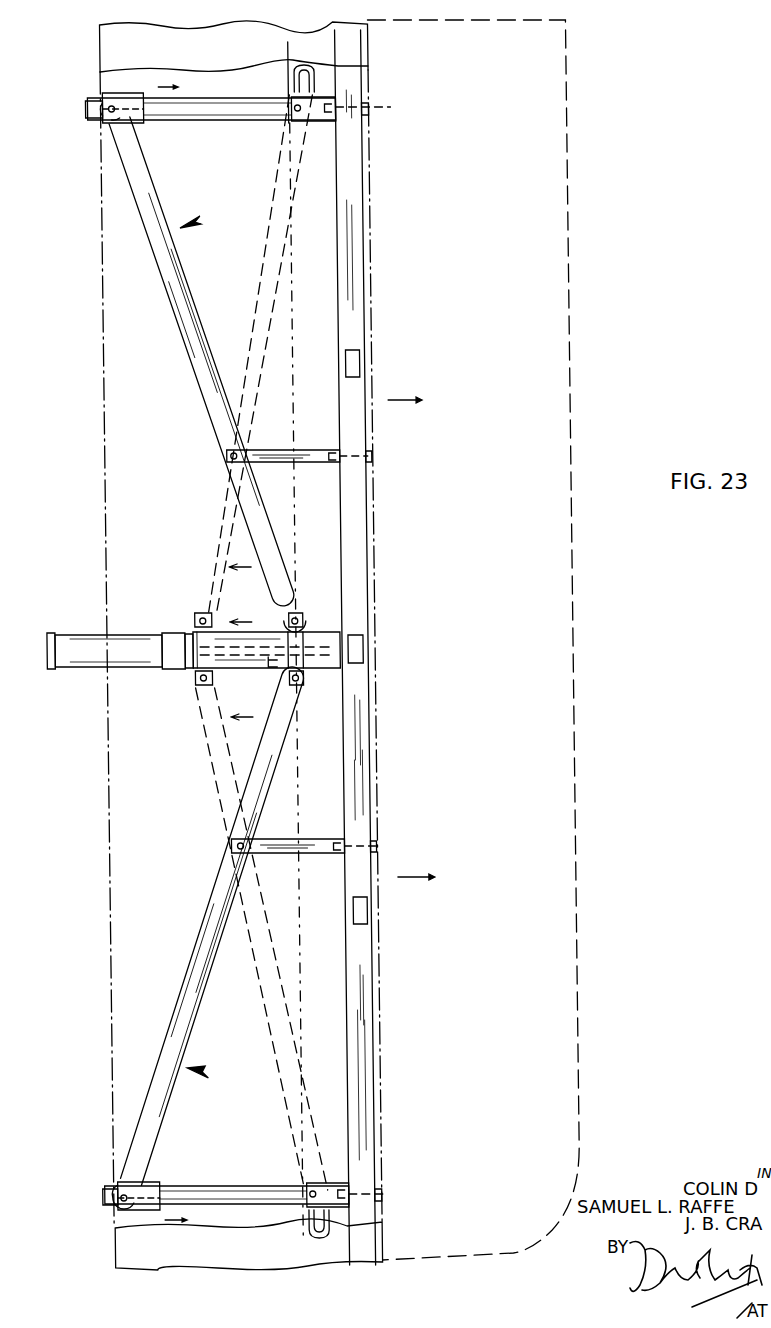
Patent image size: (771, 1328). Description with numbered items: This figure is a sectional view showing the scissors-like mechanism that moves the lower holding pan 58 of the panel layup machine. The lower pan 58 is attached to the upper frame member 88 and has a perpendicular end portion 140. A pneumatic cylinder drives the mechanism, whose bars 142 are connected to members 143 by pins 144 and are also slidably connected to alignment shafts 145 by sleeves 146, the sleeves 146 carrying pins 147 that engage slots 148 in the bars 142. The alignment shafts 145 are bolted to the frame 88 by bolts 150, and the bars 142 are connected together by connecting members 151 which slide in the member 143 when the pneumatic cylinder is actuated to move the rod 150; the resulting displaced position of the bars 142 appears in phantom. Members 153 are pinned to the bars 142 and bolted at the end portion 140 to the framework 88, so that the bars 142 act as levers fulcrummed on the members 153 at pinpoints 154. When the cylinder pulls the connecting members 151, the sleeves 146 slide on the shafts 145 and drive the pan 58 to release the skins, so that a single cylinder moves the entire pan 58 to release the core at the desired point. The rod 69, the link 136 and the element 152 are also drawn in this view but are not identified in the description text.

The lower pan 58 is at (257, 36).
The actuating rod 69 is at (90, 635).
The upper frame member 88 is at (360, 195).
The flexible link 136 is at (266, 266).
The perpendicular end portion 140 is at (376, 455).
The bars 142 is at (160, 212).
The members 143 is at (222, 633).
The pins 144 is at (293, 612).
The alignment shafts 145 is at (279, 100).
The sleeves 146 is at (144, 93).
The pins 147 is at (110, 110).
The slots 148 is at (111, 121).
The bolts 150 is at (382, 108).
The connecting members 151 is at (299, 617).
The lower pivot ear 152 is at (268, 669).
The members 153 is at (285, 452).
The pinpoints 154 is at (234, 452).